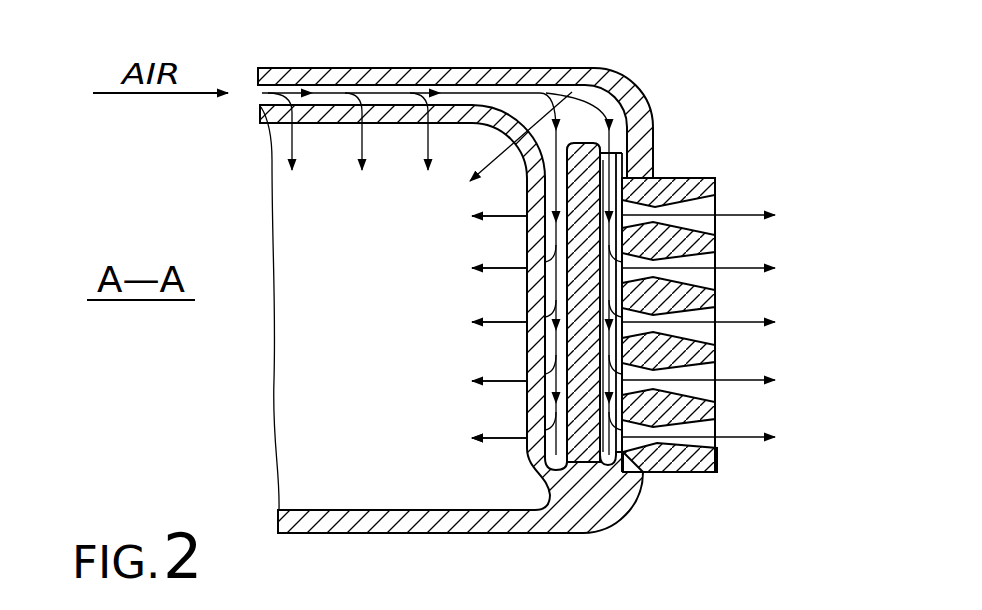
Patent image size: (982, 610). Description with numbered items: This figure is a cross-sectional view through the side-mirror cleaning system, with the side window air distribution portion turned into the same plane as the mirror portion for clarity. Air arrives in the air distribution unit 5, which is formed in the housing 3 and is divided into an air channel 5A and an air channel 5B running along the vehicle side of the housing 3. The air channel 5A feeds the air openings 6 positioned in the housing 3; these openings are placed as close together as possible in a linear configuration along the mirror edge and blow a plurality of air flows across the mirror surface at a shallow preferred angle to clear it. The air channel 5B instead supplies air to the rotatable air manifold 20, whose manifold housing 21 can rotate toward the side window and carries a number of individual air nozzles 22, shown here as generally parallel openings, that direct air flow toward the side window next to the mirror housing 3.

The housing 3 is at (567, 520).
The air distribution unit 5 is at (704, 233).
The air channel 5A is at (563, 158).
The air channel 5B is at (637, 155).
The air openings 6 is at (367, 122).
The air manifold 20 is at (657, 178).
The manifold housing 21 is at (717, 450).
The air nozzles 22 is at (707, 323).